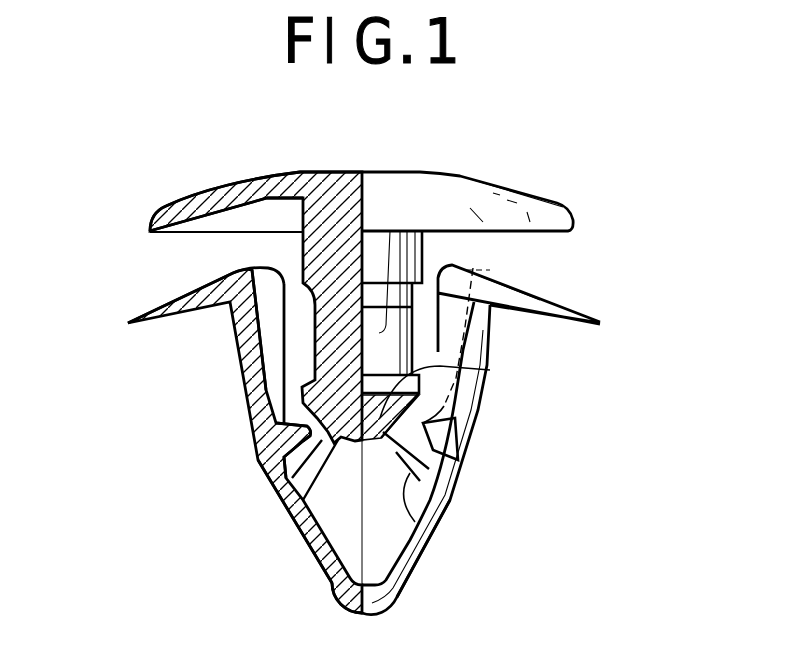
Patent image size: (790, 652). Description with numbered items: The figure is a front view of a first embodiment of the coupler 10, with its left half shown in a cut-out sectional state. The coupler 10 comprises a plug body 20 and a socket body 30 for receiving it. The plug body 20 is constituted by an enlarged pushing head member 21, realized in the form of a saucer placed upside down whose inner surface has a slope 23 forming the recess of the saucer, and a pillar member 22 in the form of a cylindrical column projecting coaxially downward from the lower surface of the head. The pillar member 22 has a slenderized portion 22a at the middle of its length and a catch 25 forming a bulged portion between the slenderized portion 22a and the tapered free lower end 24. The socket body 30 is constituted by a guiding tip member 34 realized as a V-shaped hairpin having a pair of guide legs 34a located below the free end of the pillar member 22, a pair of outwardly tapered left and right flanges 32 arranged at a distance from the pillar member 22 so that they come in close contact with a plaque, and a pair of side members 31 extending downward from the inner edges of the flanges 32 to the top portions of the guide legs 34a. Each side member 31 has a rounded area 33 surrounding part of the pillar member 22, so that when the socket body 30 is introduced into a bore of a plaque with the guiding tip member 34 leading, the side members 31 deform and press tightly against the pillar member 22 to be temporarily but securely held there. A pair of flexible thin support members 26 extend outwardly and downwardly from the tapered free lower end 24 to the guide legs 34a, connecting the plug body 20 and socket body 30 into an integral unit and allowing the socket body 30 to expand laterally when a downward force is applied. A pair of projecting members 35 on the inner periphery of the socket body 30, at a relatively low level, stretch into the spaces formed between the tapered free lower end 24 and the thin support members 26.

The coupler 10 is at (497, 153).
The plug body 20 is at (148, 200).
The pushing head member 21 is at (545, 193).
The pillar member 22 is at (425, 250).
The slenderized portion 22a is at (390, 231).
The slope 23 is at (189, 228).
The tapered free lower end 24 is at (452, 410).
The catch 25 is at (456, 368).
The thin support member 26 is at (400, 517).
The socket body 30 is at (153, 377).
The side member 31 is at (250, 420).
The flange 32 is at (205, 318).
The rounded area 33 is at (247, 364).
The guiding tip member 34 is at (308, 558).
The guide leg 34a is at (300, 523).
The projecting member 35 is at (272, 474).